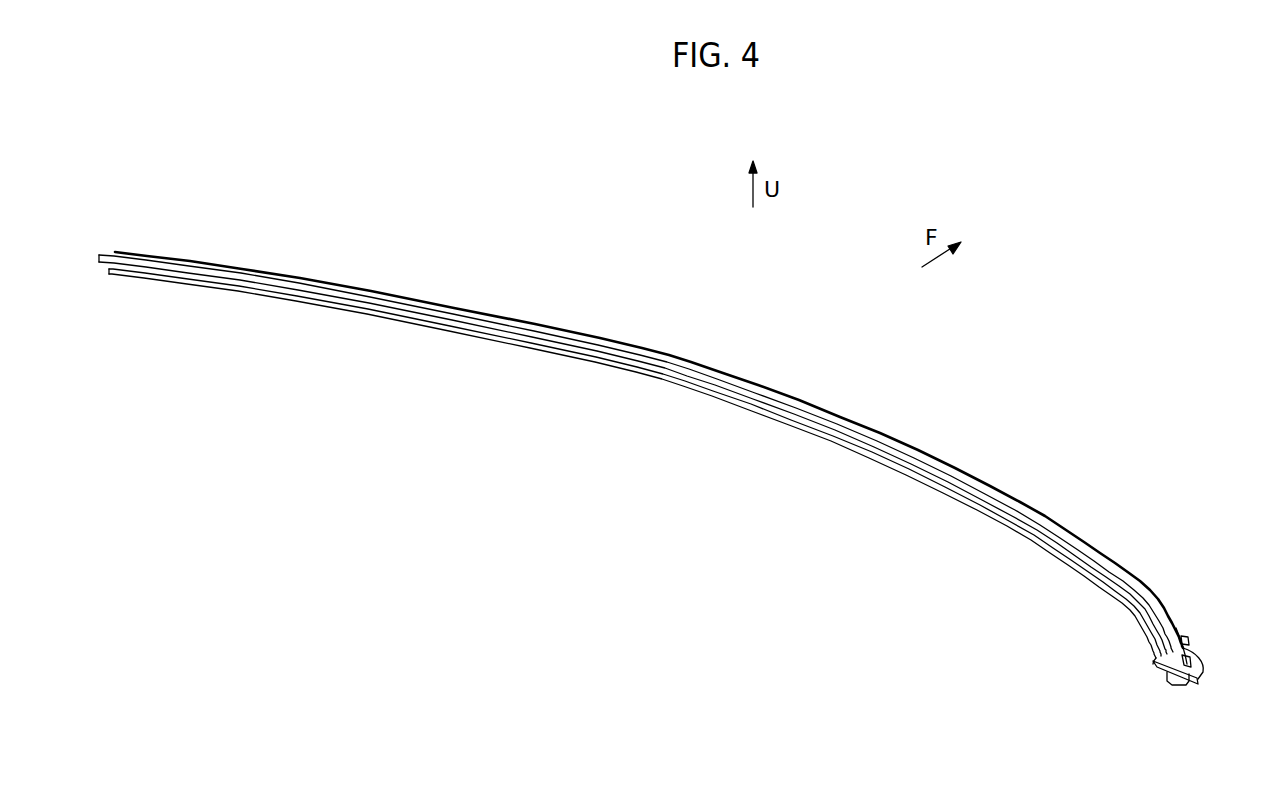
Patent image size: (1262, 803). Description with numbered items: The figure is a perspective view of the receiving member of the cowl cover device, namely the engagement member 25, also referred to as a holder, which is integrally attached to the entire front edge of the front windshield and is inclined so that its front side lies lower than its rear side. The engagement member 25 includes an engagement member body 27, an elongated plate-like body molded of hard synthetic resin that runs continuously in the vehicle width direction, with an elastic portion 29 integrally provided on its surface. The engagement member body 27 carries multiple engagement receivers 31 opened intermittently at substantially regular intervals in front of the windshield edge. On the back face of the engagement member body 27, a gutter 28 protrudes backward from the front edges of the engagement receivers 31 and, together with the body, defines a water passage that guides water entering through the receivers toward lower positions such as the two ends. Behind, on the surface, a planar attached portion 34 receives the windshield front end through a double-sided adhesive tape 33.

The engagement member 25 is at (677, 490).
The engagement member body 27 is at (1099, 560).
The gutter 28 is at (1178, 686).
The elastic portion 29 is at (1177, 628).
The engagement receivers 31 is at (1188, 661).
The double-sided adhesive tape 33 is at (1160, 654).
The attached portion 34 is at (1166, 666).